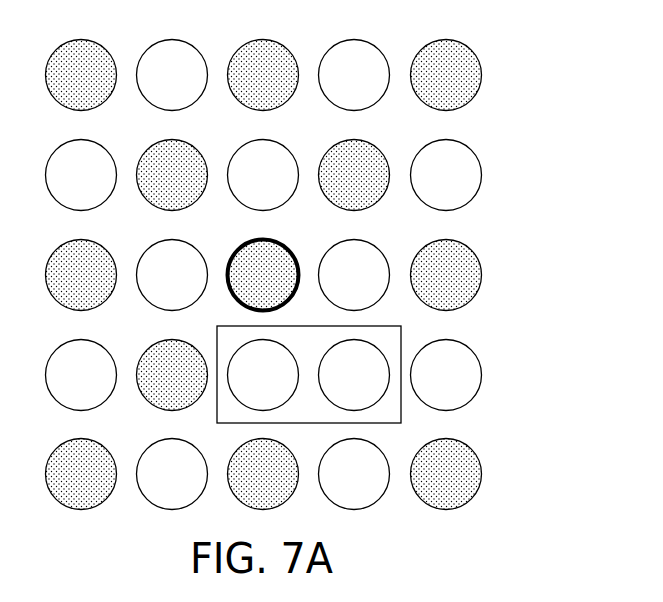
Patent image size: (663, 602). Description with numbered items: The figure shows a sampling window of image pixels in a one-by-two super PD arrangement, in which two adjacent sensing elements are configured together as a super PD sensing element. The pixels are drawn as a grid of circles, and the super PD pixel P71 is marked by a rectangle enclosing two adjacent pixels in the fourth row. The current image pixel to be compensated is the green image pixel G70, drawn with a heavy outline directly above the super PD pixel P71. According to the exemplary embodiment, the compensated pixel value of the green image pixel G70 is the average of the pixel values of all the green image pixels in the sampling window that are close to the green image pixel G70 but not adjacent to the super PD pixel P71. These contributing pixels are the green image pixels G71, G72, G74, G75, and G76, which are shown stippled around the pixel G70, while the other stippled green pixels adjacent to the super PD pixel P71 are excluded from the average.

The green image pixel G71 is at (81, 75).
The green image pixel G72 is at (263, 75).
The green image pixel G74 is at (172, 175).
The green image pixel G75 is at (354, 175).
The green image pixel G76 is at (81, 275).
The green image pixel G70 is at (263, 275).
The super PD pixel P71 is at (401, 342).